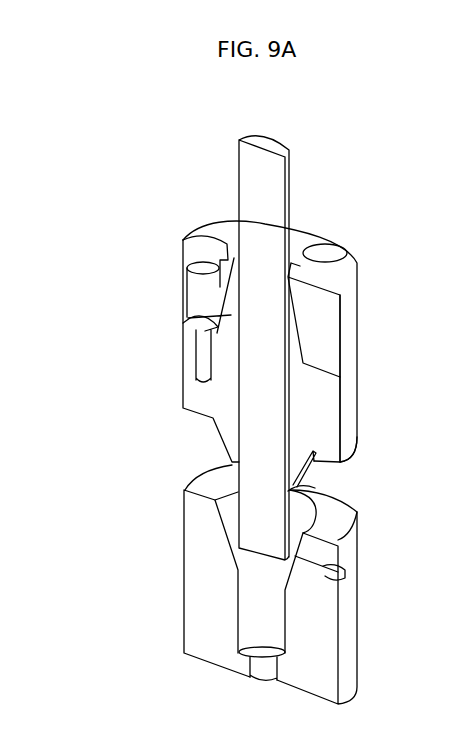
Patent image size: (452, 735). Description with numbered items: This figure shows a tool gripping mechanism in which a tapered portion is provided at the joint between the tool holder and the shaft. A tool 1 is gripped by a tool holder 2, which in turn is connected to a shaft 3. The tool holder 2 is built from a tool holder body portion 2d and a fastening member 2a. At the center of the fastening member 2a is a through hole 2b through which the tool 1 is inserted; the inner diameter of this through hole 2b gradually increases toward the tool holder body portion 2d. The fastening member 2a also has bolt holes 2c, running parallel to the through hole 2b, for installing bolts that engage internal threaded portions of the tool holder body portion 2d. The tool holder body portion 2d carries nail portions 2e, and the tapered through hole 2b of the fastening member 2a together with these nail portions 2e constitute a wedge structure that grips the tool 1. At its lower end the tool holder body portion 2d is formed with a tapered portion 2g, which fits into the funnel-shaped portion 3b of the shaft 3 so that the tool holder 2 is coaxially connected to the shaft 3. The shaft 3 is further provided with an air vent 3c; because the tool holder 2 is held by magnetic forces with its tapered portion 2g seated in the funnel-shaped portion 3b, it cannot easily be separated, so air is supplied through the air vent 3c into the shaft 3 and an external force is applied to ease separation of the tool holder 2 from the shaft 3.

The tool 1 is at (277, 143).
The tool holder 2 is at (239, 330).
The fastening member 2a is at (330, 327).
The through hole 2b is at (225, 296).
The bolt holes 2c is at (330, 253).
The tool holder body portion 2d is at (327, 408).
The nail portions 2e is at (222, 316).
The tapered portion 2g is at (312, 463).
The shaft 3 is at (255, 584).
The funnel-shaped portion 3b is at (215, 536).
The air vent 3c is at (325, 568).